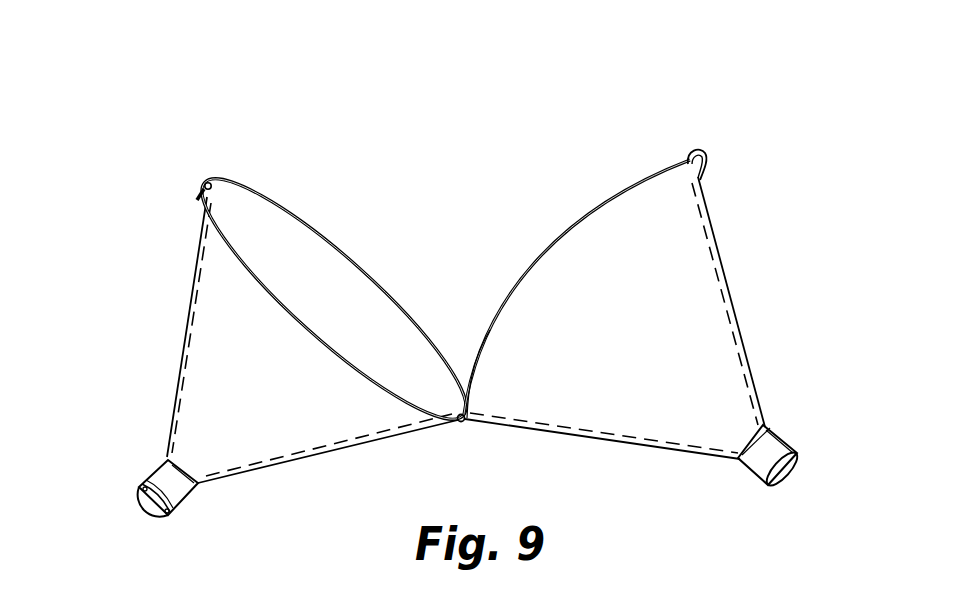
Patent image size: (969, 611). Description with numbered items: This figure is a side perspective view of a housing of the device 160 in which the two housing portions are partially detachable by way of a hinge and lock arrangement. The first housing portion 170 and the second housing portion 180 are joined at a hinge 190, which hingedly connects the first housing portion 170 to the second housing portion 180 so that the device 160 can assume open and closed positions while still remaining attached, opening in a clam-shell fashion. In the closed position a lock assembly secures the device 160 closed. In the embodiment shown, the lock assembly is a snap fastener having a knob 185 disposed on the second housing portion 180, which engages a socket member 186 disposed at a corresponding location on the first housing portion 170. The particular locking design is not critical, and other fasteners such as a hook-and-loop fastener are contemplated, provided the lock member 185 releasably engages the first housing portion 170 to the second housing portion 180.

The device 160 is at (436, 88).
The first housing portion 170 is at (150, 313).
The second housing portion 180 is at (782, 283).
The knob 185 is at (704, 163).
The socket member 186 is at (206, 182).
The hinge 190 is at (461, 423).